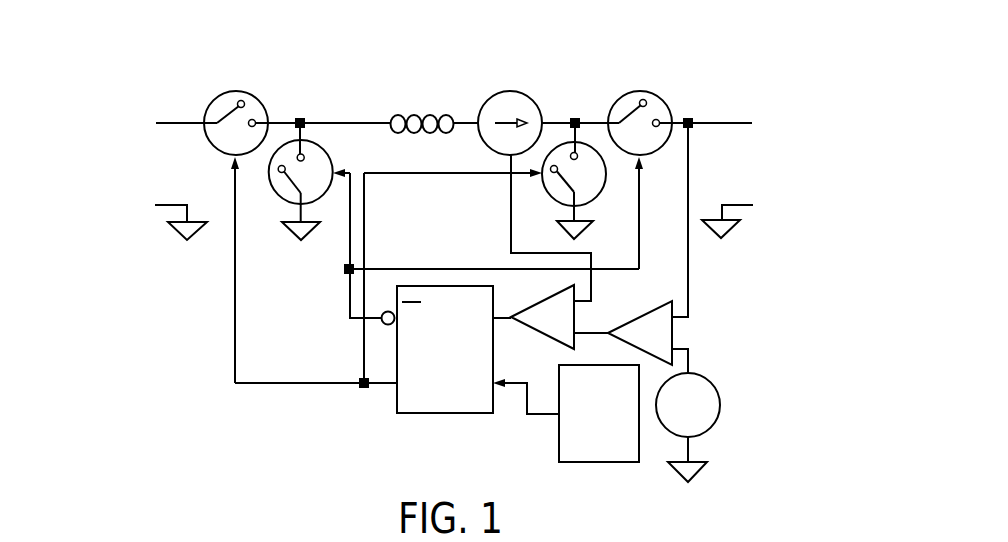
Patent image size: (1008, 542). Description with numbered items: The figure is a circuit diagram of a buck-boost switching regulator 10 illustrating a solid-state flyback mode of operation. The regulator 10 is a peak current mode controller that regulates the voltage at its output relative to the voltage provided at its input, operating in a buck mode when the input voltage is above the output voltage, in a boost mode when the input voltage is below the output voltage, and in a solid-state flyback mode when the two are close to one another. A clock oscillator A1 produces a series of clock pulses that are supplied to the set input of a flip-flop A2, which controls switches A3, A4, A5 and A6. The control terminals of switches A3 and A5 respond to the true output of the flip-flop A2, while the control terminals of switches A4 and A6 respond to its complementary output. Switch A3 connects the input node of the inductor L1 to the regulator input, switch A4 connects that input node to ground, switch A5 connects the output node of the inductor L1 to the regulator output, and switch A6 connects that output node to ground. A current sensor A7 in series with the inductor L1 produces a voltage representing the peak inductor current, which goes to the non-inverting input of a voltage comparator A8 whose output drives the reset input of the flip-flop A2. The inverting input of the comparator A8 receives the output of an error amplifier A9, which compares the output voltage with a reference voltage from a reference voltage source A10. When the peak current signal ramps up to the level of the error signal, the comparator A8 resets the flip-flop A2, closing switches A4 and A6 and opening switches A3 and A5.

The buck-boost switching regulator 10 is at (641, 67).
The clock oscillator A1 is at (599, 413).
The flip-flop A2 is at (445, 349).
The switch A3 is at (236, 123).
The switch A4 is at (301, 190).
The switch A5 is at (574, 190).
The switch A6 is at (640, 123).
The current sensor A7 is at (510, 123).
The voltage comparator A8 is at (543, 317).
The error amplifier A9 is at (640, 333).
The reference voltage source A10 is at (688, 427).
The inductor L1 is at (422, 109).